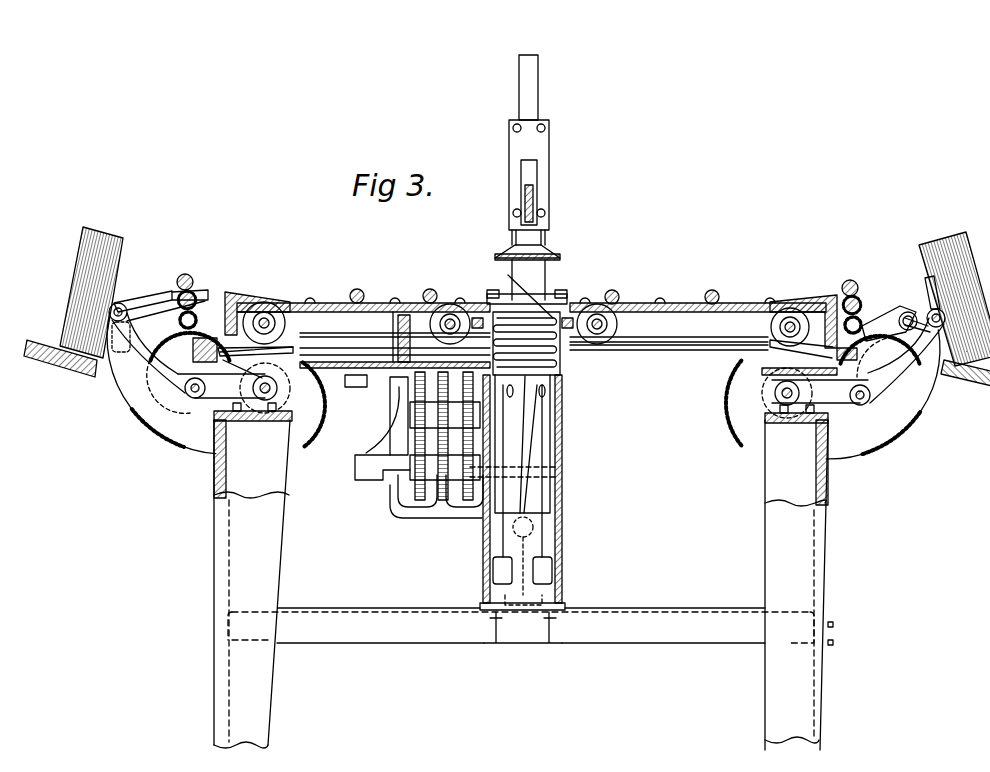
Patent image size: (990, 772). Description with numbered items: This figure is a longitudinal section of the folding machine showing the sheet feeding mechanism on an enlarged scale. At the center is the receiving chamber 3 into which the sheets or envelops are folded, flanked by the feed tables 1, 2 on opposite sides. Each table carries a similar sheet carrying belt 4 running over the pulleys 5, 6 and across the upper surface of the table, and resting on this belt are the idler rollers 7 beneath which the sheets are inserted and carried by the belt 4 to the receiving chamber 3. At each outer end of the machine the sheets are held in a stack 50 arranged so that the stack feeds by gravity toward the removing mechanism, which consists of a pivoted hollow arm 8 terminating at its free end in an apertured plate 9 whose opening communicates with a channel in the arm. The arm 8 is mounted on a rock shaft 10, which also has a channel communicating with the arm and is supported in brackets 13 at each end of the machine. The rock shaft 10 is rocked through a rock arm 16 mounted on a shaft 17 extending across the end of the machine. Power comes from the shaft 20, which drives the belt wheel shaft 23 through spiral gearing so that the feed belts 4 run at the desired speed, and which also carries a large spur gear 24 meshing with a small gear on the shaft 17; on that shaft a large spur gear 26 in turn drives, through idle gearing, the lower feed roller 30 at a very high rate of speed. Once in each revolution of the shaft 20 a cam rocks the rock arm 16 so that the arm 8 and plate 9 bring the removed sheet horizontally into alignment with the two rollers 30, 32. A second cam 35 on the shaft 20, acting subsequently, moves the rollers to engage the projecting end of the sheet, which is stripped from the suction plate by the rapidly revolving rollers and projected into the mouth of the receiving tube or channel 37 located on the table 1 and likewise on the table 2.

The feed table 1 is at (340, 302).
The feed table 2 is at (694, 302).
The receiving chamber 3 is at (556, 300).
The sheet carrying belt 4 is at (322, 302).
The pulley 5 is at (266, 300).
The pulley 6 is at (452, 302).
The idler roller 7 is at (424, 292).
The pivoted hollow arm 8 is at (928, 290).
The apertured plate 9 is at (165, 292).
The rock shaft 10 is at (118, 303).
The bracket 13 is at (173, 432).
The rock arm 16 is at (888, 342).
The shaft 17 is at (871, 400).
The shaft 20 is at (265, 400).
The belt wheel shaft 23 is at (791, 332).
The spur gear 24 is at (322, 400).
The spur gear 26 is at (148, 430).
The lower feed roller 30 is at (195, 299).
The roller 32 is at (188, 276).
The cam 35 is at (352, 424).
The receiving tube or channel 37 is at (232, 296).
The stack 50 is at (118, 257).